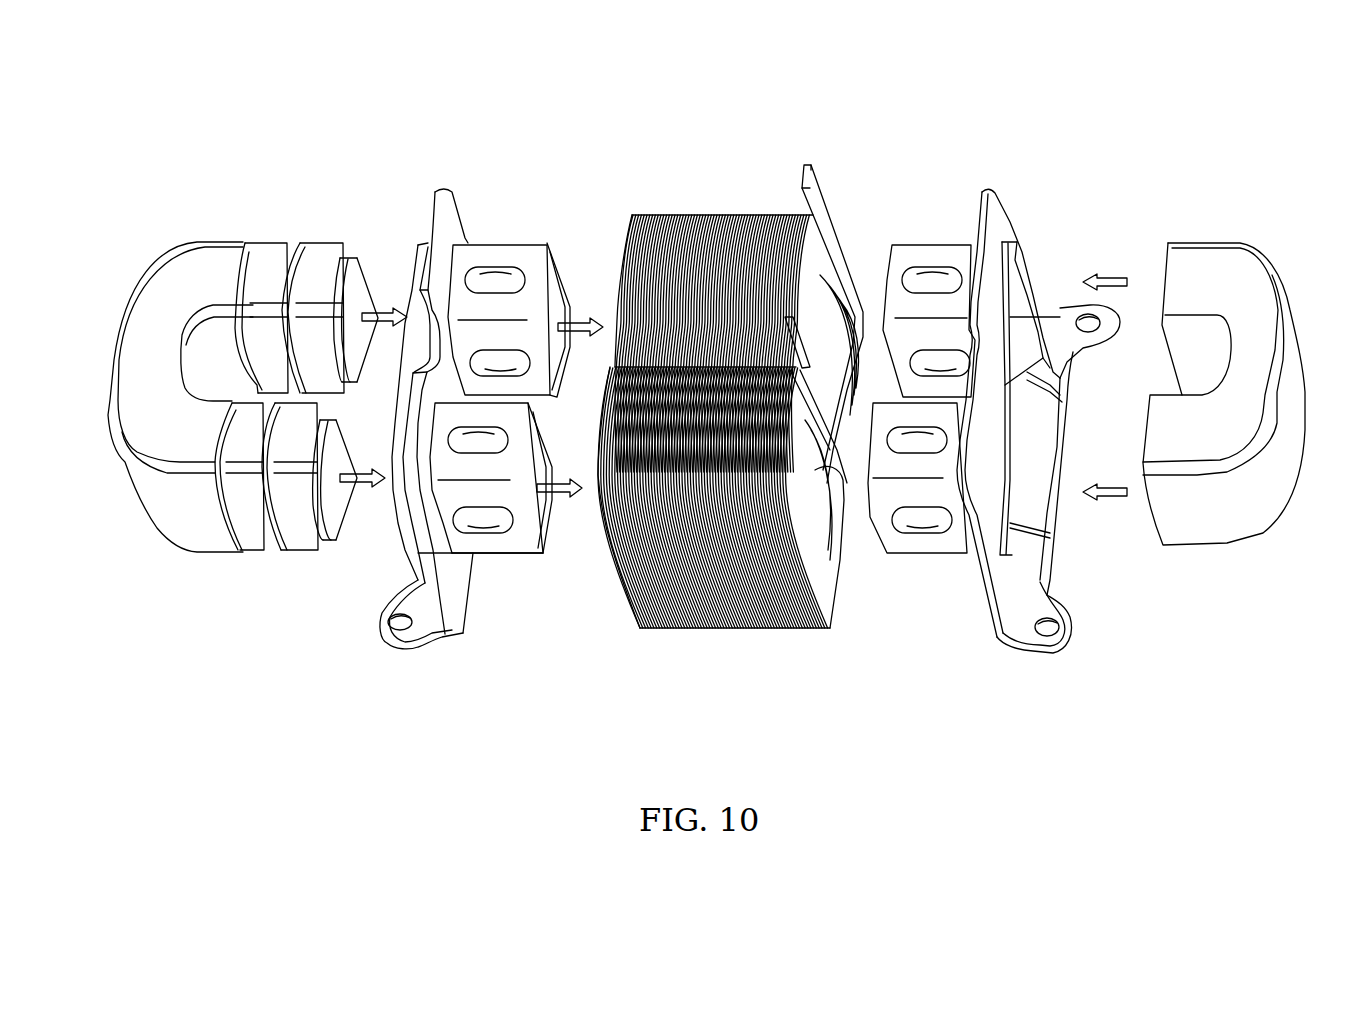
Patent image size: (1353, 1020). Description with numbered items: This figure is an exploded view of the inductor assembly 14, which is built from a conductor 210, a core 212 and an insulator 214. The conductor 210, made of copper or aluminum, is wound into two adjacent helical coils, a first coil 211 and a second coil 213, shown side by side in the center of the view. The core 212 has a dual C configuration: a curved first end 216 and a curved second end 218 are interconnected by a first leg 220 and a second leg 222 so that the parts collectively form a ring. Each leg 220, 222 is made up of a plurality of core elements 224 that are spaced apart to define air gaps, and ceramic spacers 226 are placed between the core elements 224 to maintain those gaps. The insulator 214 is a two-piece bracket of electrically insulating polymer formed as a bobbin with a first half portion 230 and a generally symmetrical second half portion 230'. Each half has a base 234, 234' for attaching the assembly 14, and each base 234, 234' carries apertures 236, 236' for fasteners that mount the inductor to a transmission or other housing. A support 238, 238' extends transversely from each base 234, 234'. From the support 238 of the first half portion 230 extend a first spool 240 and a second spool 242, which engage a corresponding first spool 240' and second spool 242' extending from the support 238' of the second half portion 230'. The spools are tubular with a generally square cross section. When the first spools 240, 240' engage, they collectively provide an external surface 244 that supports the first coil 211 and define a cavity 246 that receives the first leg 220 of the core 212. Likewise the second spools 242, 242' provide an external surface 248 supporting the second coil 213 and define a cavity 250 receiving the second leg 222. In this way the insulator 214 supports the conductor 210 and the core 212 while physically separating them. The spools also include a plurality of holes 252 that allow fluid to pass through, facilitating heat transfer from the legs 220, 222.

The inductor assembly 14 is at (765, 112).
The conductor 210 is at (712, 216).
The first coil 211 is at (678, 212).
The core 212 is at (358, 252).
The second coil 213 is at (737, 632).
The insulator 214 is at (570, 228).
The first end 216 is at (150, 540).
The second end 218 is at (1222, 547).
The first leg 220 is at (300, 244).
The second leg 222 is at (345, 622).
The core elements 224 is at (265, 543).
The ceramic spacers 226 is at (287, 543).
The first half portion 230 is at (741, 425).
The base 234 is at (413, 640).
The apertures 236 is at (384, 657).
The support 238 is at (392, 425).
The first spool 240 is at (533, 271).
The second spool 242 is at (517, 507).
The external surface 244 is at (495, 241).
The cavity 246 is at (574, 298).
The external surface 248 is at (488, 556).
The cavity 250 is at (553, 512).
The holes 252 is at (930, 285).
The second half portion 230' is at (989, 425).
The base 234' is at (1040, 645).
The apertures 236' is at (1068, 663).
The support 238' is at (1054, 301).
The first spool 240' is at (930, 270).
The second spool 242' is at (918, 509).